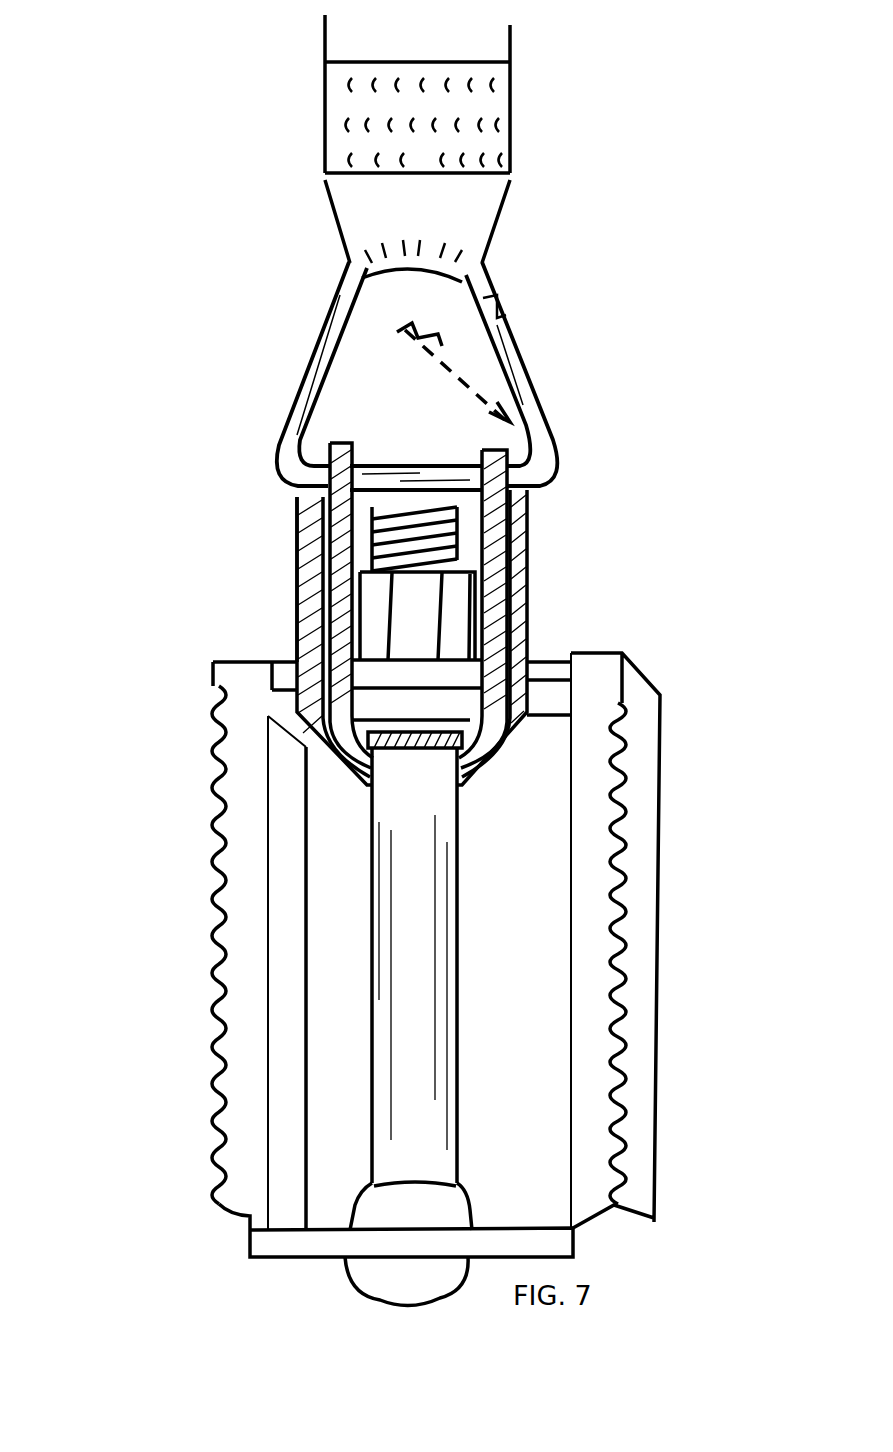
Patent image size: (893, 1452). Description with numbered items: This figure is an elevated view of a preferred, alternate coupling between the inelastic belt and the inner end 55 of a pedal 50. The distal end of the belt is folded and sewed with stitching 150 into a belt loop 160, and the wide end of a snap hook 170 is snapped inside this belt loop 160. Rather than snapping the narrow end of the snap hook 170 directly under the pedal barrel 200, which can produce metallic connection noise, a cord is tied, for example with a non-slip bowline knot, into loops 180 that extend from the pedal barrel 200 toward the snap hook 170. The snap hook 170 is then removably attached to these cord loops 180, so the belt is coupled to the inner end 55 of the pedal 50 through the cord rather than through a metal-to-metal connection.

The pedal 50 is at (168, 1007).
The inner end of pedal 55 is at (297, 720).
The stitching 150 is at (325, 112).
The belt loop 160 is at (494, 224).
The snap hook 170 is at (315, 340).
The cord loops 180 is at (483, 566).
The pedal barrel 200 is at (475, 848).